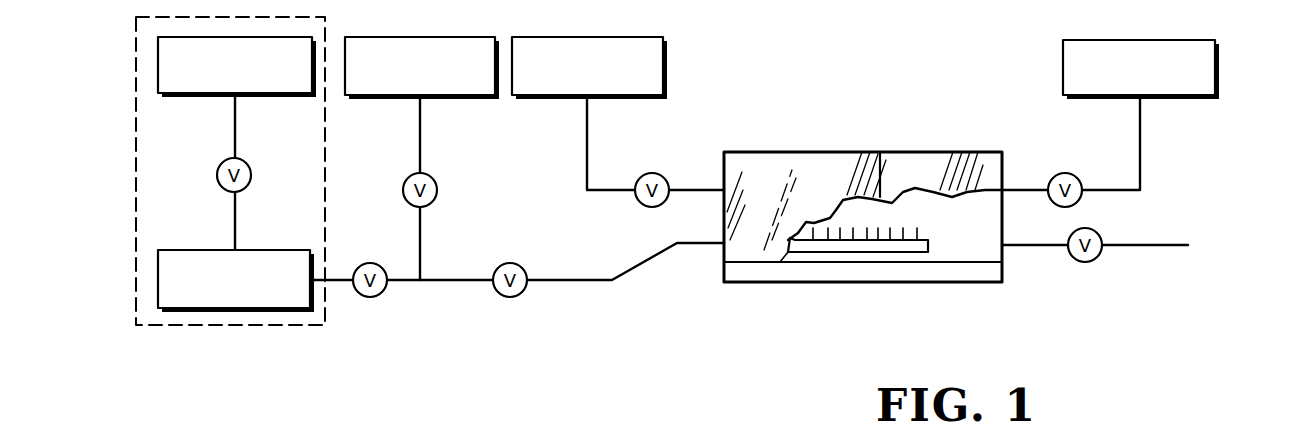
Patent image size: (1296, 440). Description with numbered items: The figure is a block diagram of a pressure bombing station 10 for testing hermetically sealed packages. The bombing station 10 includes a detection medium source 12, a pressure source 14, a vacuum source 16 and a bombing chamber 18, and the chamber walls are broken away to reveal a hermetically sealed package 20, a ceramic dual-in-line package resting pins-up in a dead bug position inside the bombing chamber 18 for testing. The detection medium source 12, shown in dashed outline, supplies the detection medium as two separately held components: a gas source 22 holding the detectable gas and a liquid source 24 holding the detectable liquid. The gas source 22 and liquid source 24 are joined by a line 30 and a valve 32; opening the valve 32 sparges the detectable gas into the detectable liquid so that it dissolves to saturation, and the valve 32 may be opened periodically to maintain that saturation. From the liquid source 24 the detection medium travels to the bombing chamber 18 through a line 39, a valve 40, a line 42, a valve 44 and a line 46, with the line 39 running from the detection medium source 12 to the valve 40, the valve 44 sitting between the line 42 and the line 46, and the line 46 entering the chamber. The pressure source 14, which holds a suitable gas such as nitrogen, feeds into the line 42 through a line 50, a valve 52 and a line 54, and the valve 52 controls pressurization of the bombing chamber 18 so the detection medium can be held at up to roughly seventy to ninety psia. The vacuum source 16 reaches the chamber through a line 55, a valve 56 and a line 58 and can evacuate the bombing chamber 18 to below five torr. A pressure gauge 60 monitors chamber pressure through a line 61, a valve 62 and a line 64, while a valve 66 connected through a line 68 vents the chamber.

The bombing station 10 is at (808, 306).
The detection medium source 12 is at (220, 325).
The pressure source 14 is at (430, 96).
The vacuum source 16 is at (571, 96).
The bombing chamber 18 is at (880, 150).
The hermetically sealed package 20 is at (878, 253).
The gas source 22 is at (208, 95).
The liquid source 24 is at (212, 250).
The line 30 is at (236, 128).
The valve 32 is at (252, 180).
The line 39 is at (332, 284).
The valve 40 is at (384, 293).
The line 42 is at (478, 283).
The valve 44 is at (518, 296).
The line 46 is at (660, 253).
The line 50 is at (418, 158).
The valve 52 is at (438, 196).
The line 54 is at (424, 264).
The line 55 is at (585, 163).
The valve 56 is at (662, 175).
The line 58 is at (708, 188).
The pressure gauge 60 is at (1219, 76).
The line 61 is at (1142, 172).
The valve 62 is at (1074, 173).
The line 64 is at (1024, 188).
The valve 66 is at (1078, 262).
The line 68 is at (1160, 247).